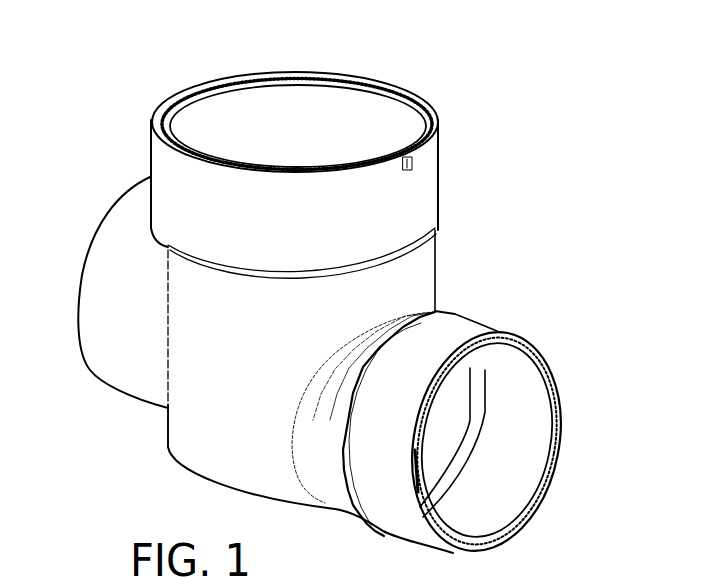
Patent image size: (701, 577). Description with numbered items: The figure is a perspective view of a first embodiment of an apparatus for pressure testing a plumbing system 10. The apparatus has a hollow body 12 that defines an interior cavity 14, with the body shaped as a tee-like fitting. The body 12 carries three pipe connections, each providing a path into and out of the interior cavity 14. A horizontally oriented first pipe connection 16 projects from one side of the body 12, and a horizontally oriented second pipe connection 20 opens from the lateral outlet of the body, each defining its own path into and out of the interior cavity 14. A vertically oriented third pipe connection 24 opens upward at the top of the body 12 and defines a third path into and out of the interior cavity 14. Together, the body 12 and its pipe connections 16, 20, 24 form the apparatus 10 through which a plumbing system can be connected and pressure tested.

The apparatus for pressure testing a plumbing system 10 is at (108, 90).
The hollow body 12 is at (440, 197).
The interior cavity 14 is at (395, 125).
The first pipe connection 16 is at (122, 191).
The second pipe connection 20 is at (562, 433).
The third pipe connection 24 is at (182, 92).